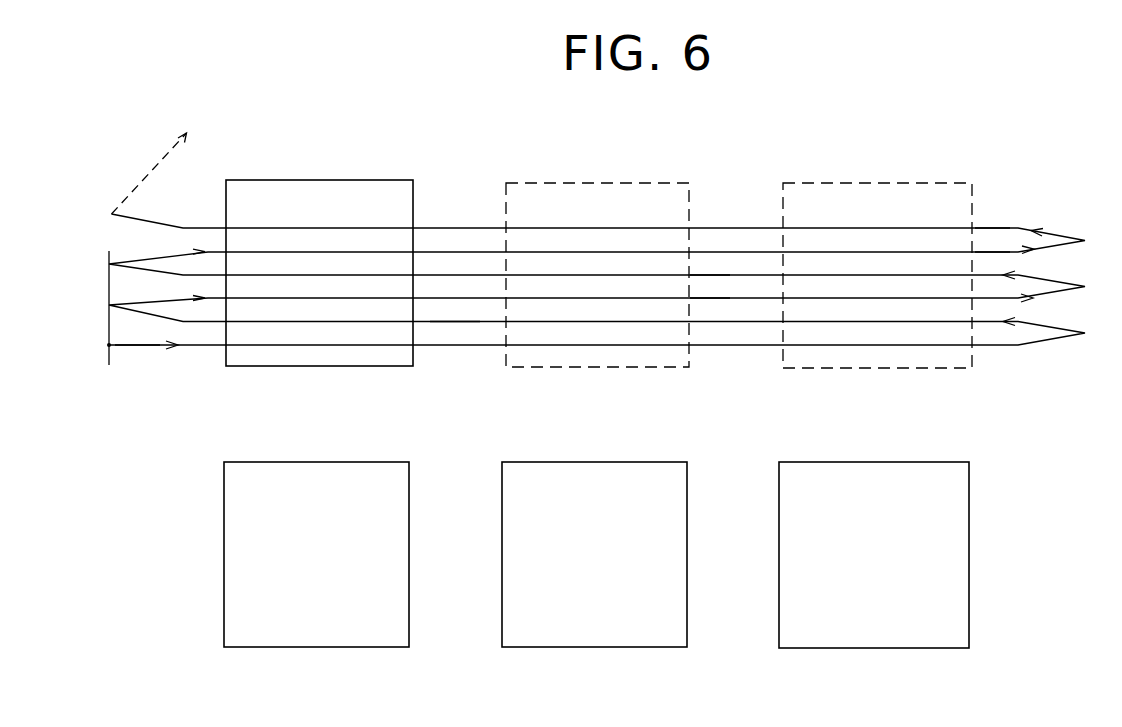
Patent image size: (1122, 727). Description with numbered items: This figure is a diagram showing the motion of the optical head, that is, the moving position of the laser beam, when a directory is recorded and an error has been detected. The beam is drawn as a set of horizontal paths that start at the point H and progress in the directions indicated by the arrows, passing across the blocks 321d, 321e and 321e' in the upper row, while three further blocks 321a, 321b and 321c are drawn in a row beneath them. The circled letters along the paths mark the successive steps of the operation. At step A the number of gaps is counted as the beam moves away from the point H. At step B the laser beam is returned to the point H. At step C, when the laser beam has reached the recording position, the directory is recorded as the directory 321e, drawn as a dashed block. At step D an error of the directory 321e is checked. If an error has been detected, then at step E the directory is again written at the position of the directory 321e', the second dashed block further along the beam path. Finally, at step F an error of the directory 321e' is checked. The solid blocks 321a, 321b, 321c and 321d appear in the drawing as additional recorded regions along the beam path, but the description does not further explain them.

The first optical element (block a) 321a is at (316, 554).
The second optical element (block b) 321b is at (594, 554).
The third optical element (block c) 321c is at (874, 555).
The optical element d 321d is at (319, 273).
The directory 321e is at (597, 275).
The rewritten directory 321e' is at (877, 275).
The gap counting step A is at (137, 333).
The beam return step B is at (455, 310).
The directory recording step C is at (710, 287).
The error checking step D is at (710, 263).
The directory rewriting step E is at (992, 241).
The second error checking step F is at (992, 218).
The point H is at (107, 319).